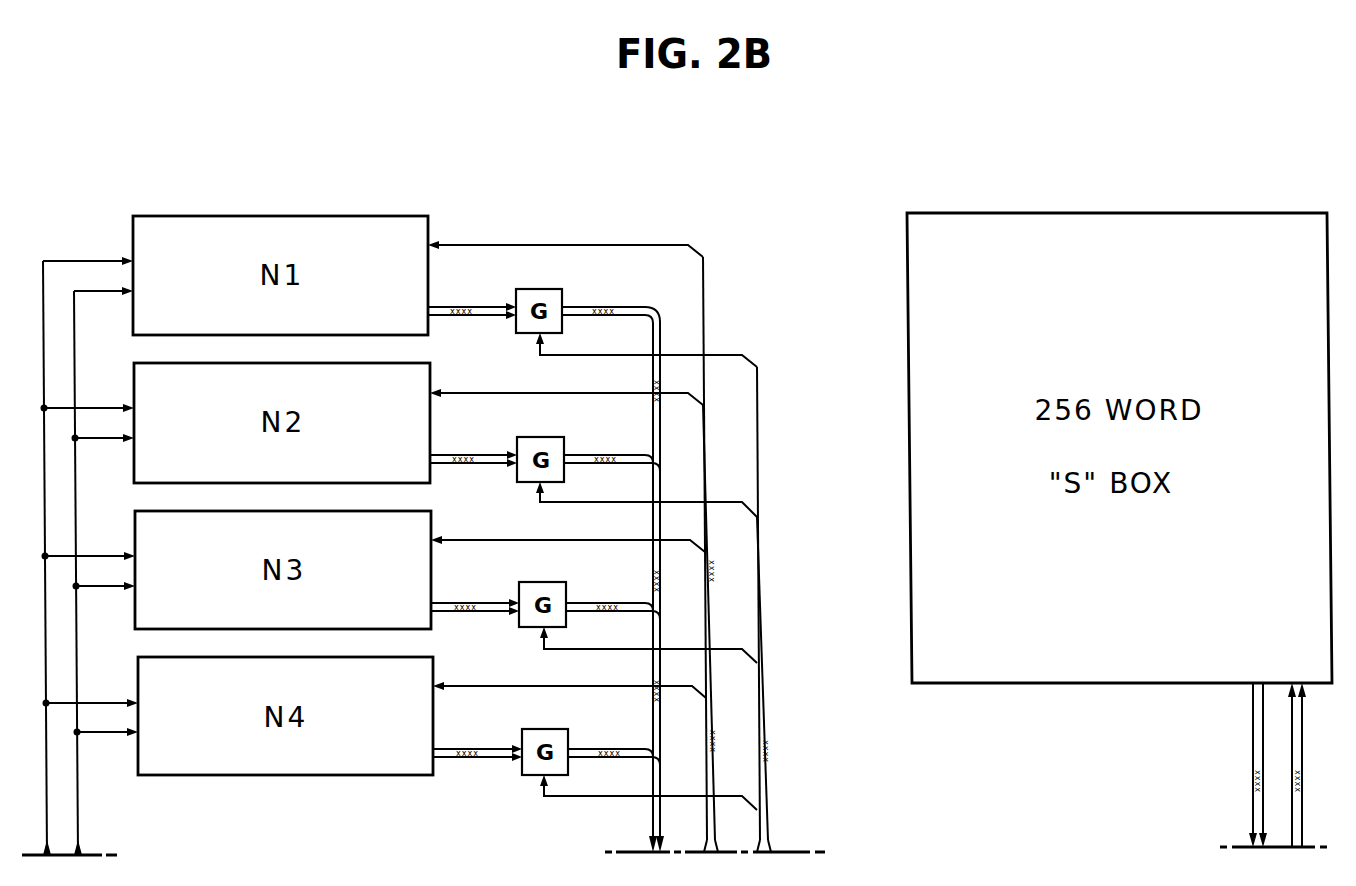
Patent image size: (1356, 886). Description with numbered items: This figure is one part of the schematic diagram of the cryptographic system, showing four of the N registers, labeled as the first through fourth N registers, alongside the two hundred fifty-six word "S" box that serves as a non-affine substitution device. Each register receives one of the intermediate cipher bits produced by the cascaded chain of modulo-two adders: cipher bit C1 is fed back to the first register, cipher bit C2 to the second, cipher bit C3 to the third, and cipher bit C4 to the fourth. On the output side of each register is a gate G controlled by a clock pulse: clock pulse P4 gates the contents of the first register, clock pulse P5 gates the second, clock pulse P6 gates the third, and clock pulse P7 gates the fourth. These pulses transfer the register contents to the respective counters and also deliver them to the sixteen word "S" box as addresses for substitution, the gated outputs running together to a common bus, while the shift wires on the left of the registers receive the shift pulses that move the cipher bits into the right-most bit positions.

The cipher bit C1 is at (572, 246).
The cipher bit C2 is at (572, 394).
The cipher bit C3 is at (573, 541).
The cipher bit C4 is at (573, 687).
The clock pulse P4 is at (547, 357).
The clock pulse P5 is at (548, 504).
The clock pulse P6 is at (551, 651).
The clock pulse P7 is at (553, 798).